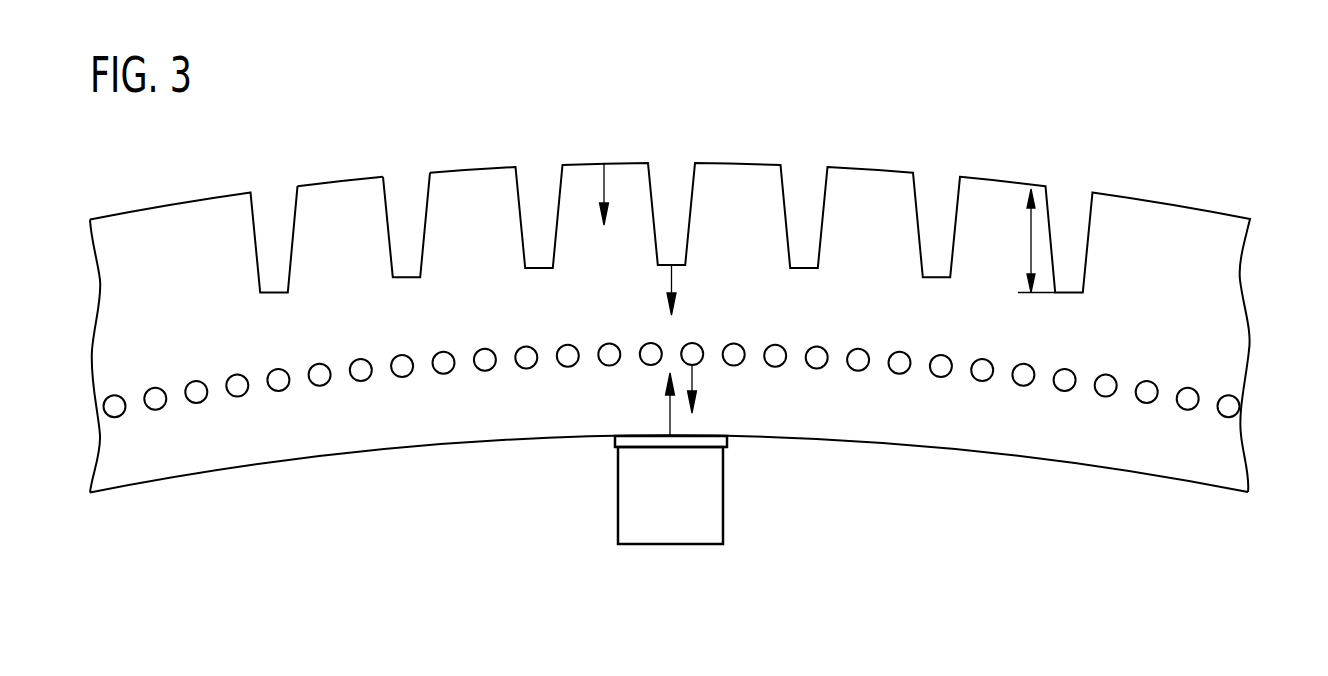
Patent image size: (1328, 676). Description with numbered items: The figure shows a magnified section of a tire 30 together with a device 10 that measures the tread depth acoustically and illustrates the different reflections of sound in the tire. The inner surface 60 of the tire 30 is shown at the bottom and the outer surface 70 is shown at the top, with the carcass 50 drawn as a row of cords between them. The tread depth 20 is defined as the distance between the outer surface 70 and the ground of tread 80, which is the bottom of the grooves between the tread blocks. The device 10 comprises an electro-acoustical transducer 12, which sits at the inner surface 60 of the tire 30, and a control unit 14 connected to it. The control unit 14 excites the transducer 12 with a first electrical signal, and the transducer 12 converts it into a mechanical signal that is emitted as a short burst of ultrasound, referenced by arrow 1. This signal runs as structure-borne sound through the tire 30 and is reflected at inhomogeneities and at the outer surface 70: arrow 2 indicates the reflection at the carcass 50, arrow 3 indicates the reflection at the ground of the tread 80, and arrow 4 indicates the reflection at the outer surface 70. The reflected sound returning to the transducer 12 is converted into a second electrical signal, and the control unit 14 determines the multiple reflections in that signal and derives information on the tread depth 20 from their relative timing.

The emission of the burst 1 is at (670, 403).
The reflection at the carcass 2 is at (694, 380).
The reflection at the ground of the tread 3 is at (673, 279).
The reflection at the outer surface 4 is at (605, 176).
The device 10 is at (653, 573).
The electro-acoustical transducer 12 is at (612, 447).
The control unit 14 is at (725, 492).
The tread depth 20 is at (1029, 242).
The tire 30 is at (702, 311).
The carcass 50 is at (1154, 368).
The inner surface 60 is at (420, 447).
The outer surface 70 is at (338, 180).
The ground of tread 80 is at (404, 279).